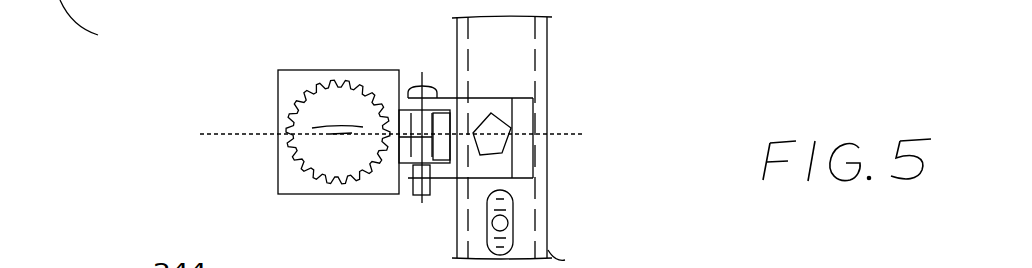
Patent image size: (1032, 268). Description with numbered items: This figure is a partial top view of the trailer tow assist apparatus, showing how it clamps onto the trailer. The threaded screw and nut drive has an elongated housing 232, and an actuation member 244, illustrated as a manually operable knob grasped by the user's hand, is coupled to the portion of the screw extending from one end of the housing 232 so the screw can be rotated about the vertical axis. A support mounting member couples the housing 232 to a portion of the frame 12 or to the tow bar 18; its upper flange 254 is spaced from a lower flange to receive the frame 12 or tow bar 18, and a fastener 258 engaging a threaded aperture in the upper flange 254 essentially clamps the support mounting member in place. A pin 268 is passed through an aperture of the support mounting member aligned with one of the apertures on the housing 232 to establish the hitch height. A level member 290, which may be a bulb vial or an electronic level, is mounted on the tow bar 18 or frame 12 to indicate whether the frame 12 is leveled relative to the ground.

The housing 232 is at (305, 75).
The actuation member 244 is at (338, 132).
The pin 268 is at (432, 88).
The upper flange 254 is at (497, 168).
The fastener 258 is at (500, 128).
The level member 290 is at (513, 233).
The frame 12 is at (577, 138).
The tow bar 18 is at (517, 51).